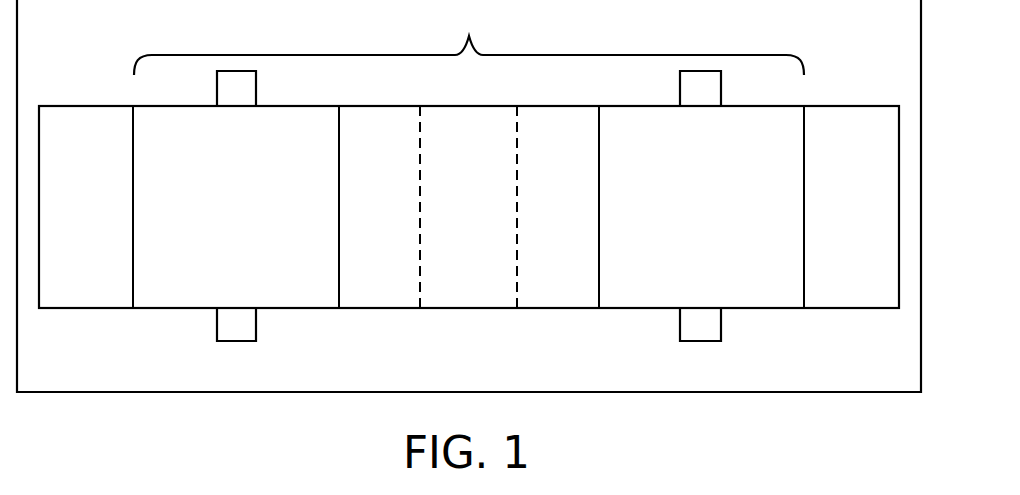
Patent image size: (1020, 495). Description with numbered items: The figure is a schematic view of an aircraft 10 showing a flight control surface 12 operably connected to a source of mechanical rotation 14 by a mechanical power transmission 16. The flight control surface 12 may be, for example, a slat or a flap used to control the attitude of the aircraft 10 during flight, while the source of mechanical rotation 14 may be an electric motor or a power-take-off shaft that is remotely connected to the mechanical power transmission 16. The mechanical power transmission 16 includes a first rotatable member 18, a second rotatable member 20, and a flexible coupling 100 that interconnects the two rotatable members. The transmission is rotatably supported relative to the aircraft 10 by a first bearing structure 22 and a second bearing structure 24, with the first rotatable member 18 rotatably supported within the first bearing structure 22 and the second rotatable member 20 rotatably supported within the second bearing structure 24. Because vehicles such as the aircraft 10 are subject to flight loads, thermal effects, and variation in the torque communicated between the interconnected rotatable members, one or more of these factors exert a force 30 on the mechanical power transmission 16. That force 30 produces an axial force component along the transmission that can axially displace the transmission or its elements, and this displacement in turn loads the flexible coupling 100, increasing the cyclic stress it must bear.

The aircraft 10 is at (320, 393).
The flight control surface 12 is at (72, 219).
The source of mechanical rotation 14 is at (834, 219).
The mechanical power transmission 16 is at (469, 38).
The first rotatable member 18 is at (693, 219).
The second rotatable member 20 is at (219, 219).
The first bearing structure 22 is at (680, 323).
The second bearing structure 24 is at (217, 323).
The force 30 is at (755, 313).
The flexible coupling 100 is at (447, 219).